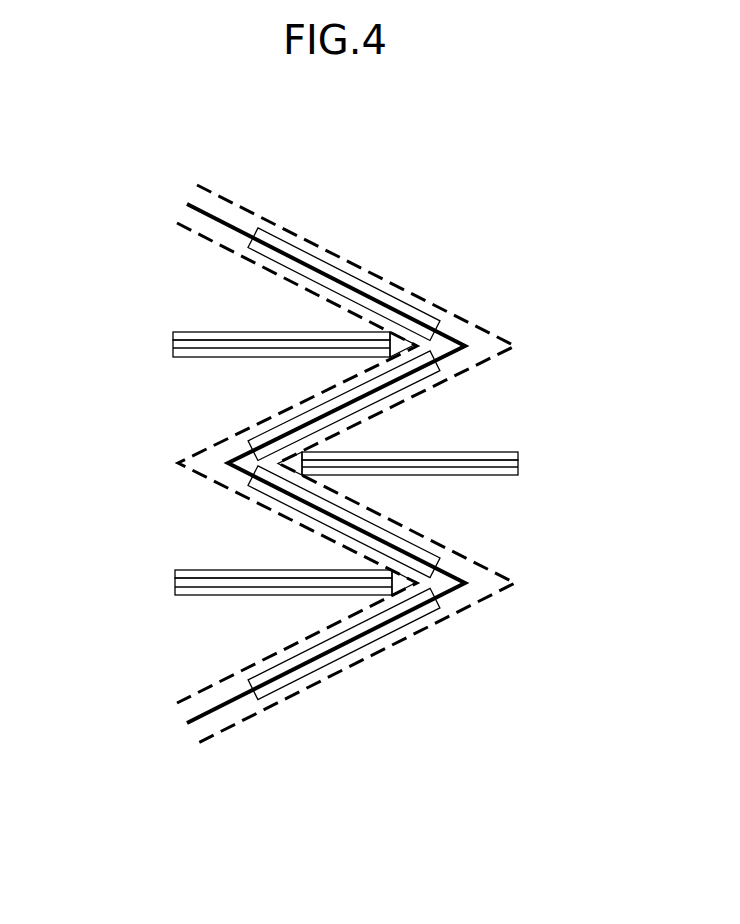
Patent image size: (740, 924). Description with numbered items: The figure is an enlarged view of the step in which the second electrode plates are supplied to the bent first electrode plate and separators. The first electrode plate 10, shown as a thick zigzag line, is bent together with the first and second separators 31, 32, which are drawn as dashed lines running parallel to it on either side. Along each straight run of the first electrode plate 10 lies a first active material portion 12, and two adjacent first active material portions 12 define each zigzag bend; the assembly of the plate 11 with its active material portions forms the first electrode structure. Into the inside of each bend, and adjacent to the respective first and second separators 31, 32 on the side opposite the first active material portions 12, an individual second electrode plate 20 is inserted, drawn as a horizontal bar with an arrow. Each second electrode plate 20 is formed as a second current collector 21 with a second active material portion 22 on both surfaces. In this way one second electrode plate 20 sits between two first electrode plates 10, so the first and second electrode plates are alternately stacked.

The first electrode plate 10 is at (337, 176).
The pipe 11 is at (337, 280).
The first active material portion 12 is at (307, 250).
The second electrode plate 20 is at (102, 308).
The second current collector 21 is at (175, 343).
The second active material portion 22 is at (200, 332).
The first separator 31 is at (217, 243).
The second separator 32 is at (427, 300).